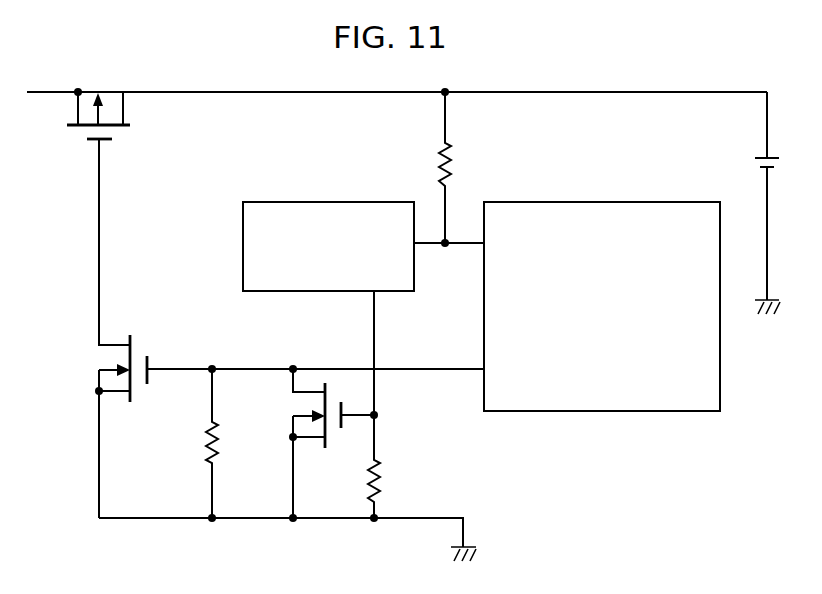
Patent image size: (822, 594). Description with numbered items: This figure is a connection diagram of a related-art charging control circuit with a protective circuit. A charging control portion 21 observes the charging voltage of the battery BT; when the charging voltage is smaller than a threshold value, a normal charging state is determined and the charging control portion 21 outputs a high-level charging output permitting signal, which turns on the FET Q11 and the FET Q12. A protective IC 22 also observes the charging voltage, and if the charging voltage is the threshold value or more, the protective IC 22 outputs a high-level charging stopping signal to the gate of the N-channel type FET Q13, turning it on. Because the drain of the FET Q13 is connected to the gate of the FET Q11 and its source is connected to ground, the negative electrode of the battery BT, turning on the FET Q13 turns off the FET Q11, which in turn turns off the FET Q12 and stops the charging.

The FET Q12 is at (82, 133).
The FET Q11 is at (138, 342).
The N-channel type FET Q13 is at (290, 403).
The protective IC 22 is at (352, 202).
The charging control portion 21 is at (562, 202).
The battery BT is at (752, 163).